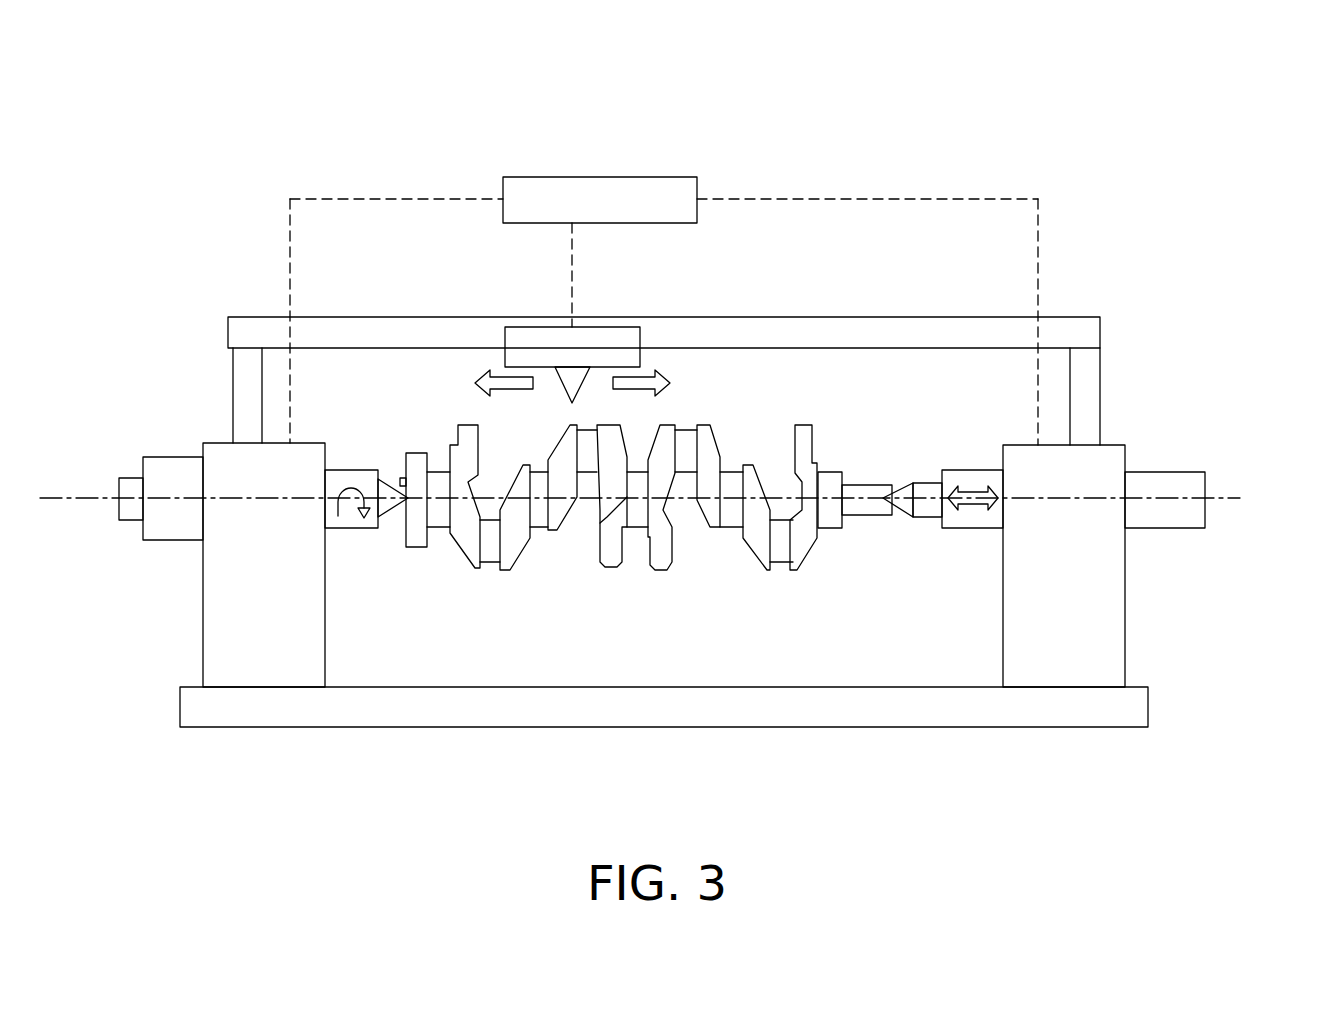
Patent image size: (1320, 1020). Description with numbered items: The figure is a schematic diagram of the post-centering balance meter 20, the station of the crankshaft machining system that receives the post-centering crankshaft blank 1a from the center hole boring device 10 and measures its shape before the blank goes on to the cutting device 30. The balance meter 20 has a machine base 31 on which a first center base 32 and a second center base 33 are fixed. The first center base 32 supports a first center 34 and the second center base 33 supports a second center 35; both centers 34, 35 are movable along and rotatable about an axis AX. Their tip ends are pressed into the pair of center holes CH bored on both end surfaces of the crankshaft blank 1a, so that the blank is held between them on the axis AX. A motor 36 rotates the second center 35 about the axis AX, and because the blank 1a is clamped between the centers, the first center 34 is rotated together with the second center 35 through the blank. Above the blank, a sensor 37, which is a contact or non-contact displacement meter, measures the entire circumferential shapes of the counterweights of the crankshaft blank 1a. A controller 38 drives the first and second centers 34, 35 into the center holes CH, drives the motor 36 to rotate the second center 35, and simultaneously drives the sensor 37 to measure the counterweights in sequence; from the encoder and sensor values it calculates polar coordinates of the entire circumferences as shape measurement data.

The post-centering crankshaft blank 1a is at (709, 533).
The center hole boring device 10 is at (545, 112).
The cutting device 30 is at (552, 177).
The post-centering balance meter 20 is at (1125, 268).
The machine base 31 is at (375, 707).
The first center base 32 is at (1115, 627).
The second center base 33 is at (218, 652).
The first center 34 is at (927, 517).
The second center 35 is at (380, 528).
The motor 36 is at (160, 456).
The sensor 37 is at (617, 340).
The controller 38 is at (615, 177).
The center holes CH is at (401, 478).
The axis AX is at (1246, 490).